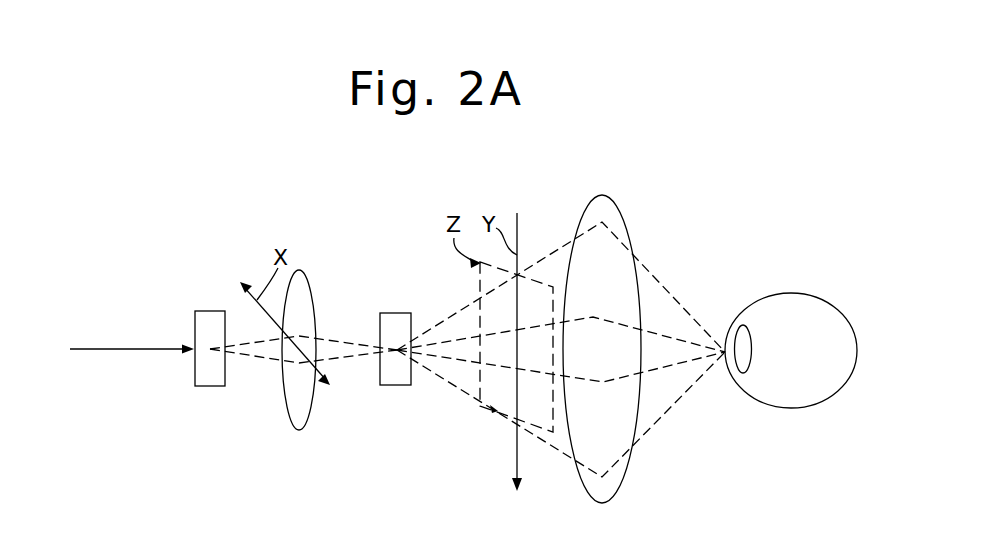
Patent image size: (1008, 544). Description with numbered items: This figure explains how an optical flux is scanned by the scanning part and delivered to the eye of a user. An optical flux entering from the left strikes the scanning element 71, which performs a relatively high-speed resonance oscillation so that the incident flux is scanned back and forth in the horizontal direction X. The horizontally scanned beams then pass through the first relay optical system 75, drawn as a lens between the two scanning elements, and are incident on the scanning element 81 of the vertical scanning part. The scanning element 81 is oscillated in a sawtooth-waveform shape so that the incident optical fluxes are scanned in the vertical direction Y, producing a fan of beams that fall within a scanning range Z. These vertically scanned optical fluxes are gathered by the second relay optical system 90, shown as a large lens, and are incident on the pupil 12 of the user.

The scanning element 71 is at (195, 322).
The first relay optical system 75 is at (272, 416).
The scanning element 81 is at (390, 313).
The second relay optical system 90 is at (652, 240).
The pupil 12 is at (747, 342).